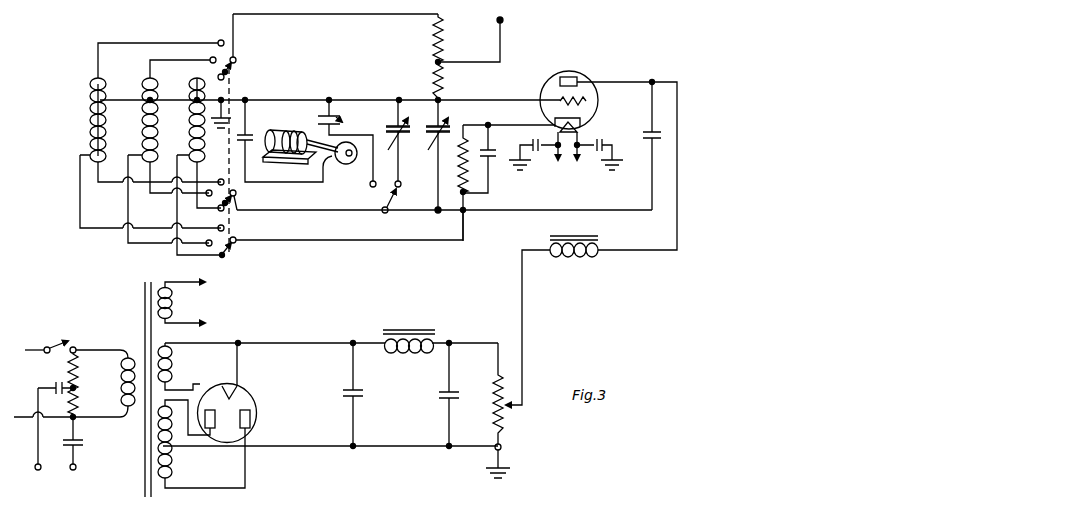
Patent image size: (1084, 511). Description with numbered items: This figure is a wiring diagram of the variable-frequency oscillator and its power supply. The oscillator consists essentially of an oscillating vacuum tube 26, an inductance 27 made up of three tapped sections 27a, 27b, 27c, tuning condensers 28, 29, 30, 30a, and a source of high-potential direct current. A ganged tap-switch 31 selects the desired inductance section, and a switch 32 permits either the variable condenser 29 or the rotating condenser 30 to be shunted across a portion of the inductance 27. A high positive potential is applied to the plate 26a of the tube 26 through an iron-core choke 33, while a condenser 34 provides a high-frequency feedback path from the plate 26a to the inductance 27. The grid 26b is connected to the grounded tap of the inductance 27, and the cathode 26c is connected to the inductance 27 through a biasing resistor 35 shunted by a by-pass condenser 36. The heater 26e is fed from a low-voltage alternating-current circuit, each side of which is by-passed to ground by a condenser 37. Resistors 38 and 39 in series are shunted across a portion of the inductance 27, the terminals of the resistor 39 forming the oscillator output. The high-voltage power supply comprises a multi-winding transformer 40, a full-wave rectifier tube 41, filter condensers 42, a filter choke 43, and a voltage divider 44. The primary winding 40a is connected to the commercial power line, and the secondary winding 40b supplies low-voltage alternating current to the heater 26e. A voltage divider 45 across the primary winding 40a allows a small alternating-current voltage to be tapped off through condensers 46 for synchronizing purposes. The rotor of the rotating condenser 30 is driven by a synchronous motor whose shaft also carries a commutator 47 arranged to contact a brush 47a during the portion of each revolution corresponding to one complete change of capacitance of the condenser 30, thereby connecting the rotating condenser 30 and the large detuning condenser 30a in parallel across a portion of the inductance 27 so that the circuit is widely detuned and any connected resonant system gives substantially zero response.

The oscillating vacuum tube 26 is at (545, 81).
The plate 26a is at (578, 80).
The grid 26b is at (587, 103).
The cathode 26c is at (582, 118).
The heater 26e is at (571, 154).
The inductance 27 is at (162, 123).
The inductance section 27a is at (92, 108).
The inductance section 27b is at (150, 97).
The inductance section 27c is at (197, 100).
The tuning condenser 28 is at (435, 155).
The variable condenser 29 is at (395, 143).
The rotating condenser 30 is at (347, 142).
The detuning condenser 30a is at (280, 141).
The ganged tap-switch 31 is at (237, 62).
The switch 32 is at (383, 201).
The iron-core choke 33 is at (574, 238).
The condenser 34 is at (658, 146).
The biasing resistor 35 is at (454, 183).
The by-pass condenser 36 is at (479, 159).
The condenser 37 is at (566, 151).
The resistor 38 is at (458, 39).
The resistor 39 is at (428, 80).
The multi-winding transformer 40 is at (144, 313).
The primary winding 40a is at (121, 390).
The secondary winding 40b is at (181, 302).
The full-wave rectifier tube 41 is at (251, 419).
The filter condensers 42 is at (401, 394).
The filter choke 43 is at (409, 332).
The voltage divider 44 is at (490, 410).
The voltage divider 45 is at (80, 362).
The condensers 46 is at (54, 385).
The commutator 47 is at (348, 157).
The brush 47a is at (329, 171).